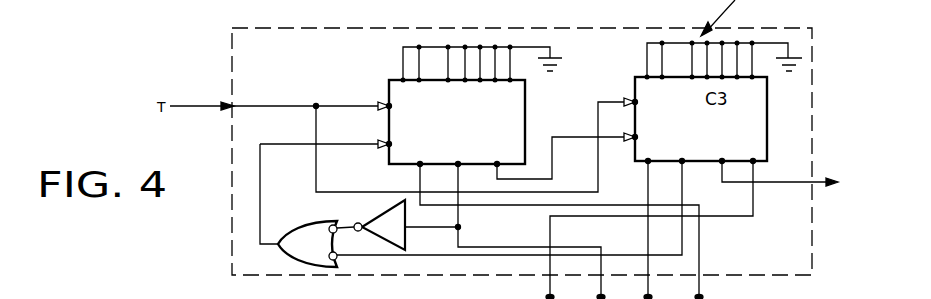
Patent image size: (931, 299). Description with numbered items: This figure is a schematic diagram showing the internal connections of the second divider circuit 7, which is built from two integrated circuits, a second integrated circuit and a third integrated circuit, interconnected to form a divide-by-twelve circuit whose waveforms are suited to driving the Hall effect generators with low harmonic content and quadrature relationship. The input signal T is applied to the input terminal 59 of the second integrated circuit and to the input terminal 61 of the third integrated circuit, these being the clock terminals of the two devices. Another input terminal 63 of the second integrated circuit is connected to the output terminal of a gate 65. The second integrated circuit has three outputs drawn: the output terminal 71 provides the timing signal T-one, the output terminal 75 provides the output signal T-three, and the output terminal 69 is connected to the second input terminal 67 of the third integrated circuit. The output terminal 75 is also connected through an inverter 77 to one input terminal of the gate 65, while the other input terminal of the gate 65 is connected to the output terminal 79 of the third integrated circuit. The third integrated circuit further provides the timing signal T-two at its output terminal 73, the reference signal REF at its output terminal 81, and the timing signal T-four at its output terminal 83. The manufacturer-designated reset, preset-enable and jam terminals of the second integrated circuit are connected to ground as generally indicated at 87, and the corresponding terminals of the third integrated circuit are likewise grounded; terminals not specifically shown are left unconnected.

The second divider circuit 7 is at (812, 81).
The ground connection 87 is at (383, 76).
The input terminal 59 is at (392, 106).
The input terminal 63 is at (392, 143).
The output terminal 71 is at (418, 167).
The output terminal 75 is at (457, 161).
The output terminal 69 is at (497, 161).
The input terminal 61 is at (638, 102).
The second input terminal 67 is at (638, 136).
The output terminal 73 is at (646, 164).
The output terminal 79 is at (684, 159).
The output terminal 81 is at (723, 159).
The output terminal 83 is at (758, 152).
The gate 65 is at (307, 234).
The inverter 77 is at (390, 222).